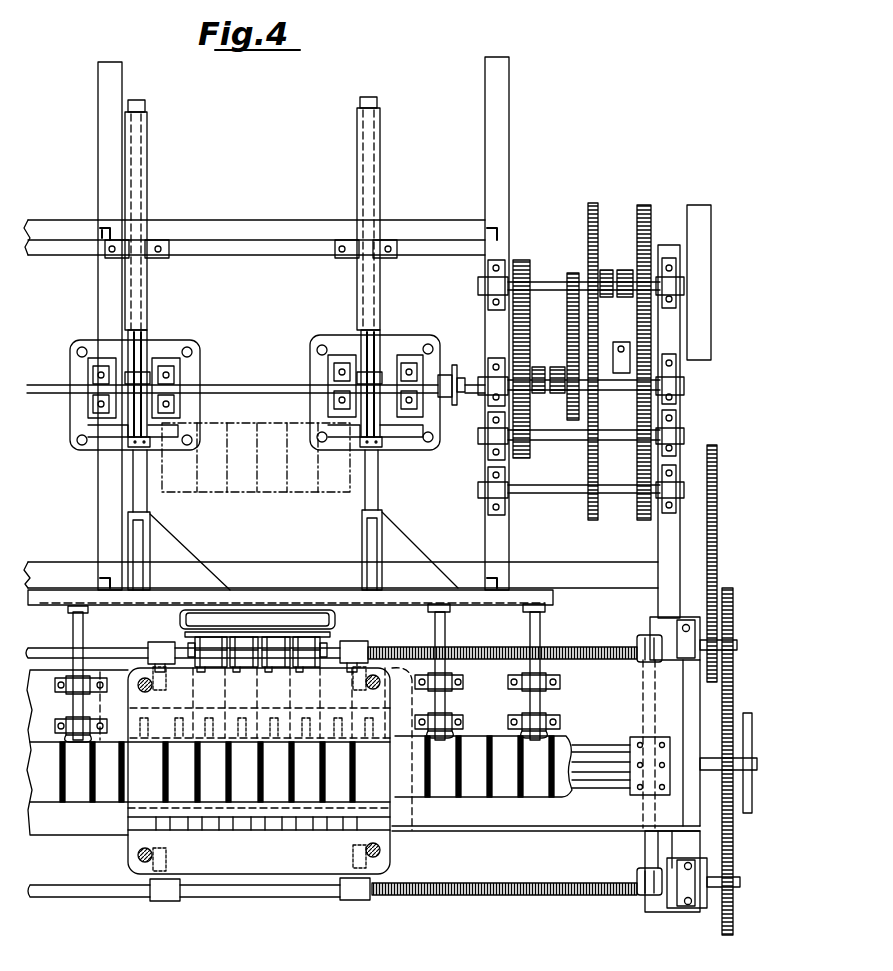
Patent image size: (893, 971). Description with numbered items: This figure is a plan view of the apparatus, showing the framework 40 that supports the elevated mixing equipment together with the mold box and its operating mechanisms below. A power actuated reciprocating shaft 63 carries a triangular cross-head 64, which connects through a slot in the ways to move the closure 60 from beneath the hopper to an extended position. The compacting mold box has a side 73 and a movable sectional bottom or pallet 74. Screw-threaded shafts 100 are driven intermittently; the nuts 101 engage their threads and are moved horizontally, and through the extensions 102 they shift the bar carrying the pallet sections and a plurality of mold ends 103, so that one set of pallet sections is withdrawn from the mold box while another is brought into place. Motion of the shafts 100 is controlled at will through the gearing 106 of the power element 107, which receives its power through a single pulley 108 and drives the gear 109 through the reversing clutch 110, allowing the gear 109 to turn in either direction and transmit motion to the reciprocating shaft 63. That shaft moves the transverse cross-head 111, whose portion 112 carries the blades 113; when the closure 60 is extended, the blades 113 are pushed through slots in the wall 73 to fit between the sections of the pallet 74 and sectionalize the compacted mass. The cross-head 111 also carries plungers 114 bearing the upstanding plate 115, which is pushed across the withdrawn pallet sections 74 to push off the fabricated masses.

The framework 40 is at (503, 230).
The reciprocating shaft 63 is at (380, 281).
The triangular cross-head 64 is at (143, 340).
The closure 60 is at (237, 494).
The pulley 108 is at (705, 212).
The gear 109 is at (527, 327).
The reversing clutch 110 is at (545, 368).
The power element 107 is at (652, 411).
The gearing 106 is at (715, 459).
The transverse cross-head 111 is at (338, 578).
The portion 112 is at (257, 641).
The blades 113 is at (203, 708).
The plungers 114 is at (83, 631).
The upstanding plate 115 is at (50, 740).
The screw-threaded shafts 100 is at (52, 657).
The nuts 101 is at (647, 637).
The extensions 102 is at (650, 851).
The mold ends 103 is at (135, 790).
The side of the mold box 73 is at (265, 749).
The pallet 74 is at (185, 784).